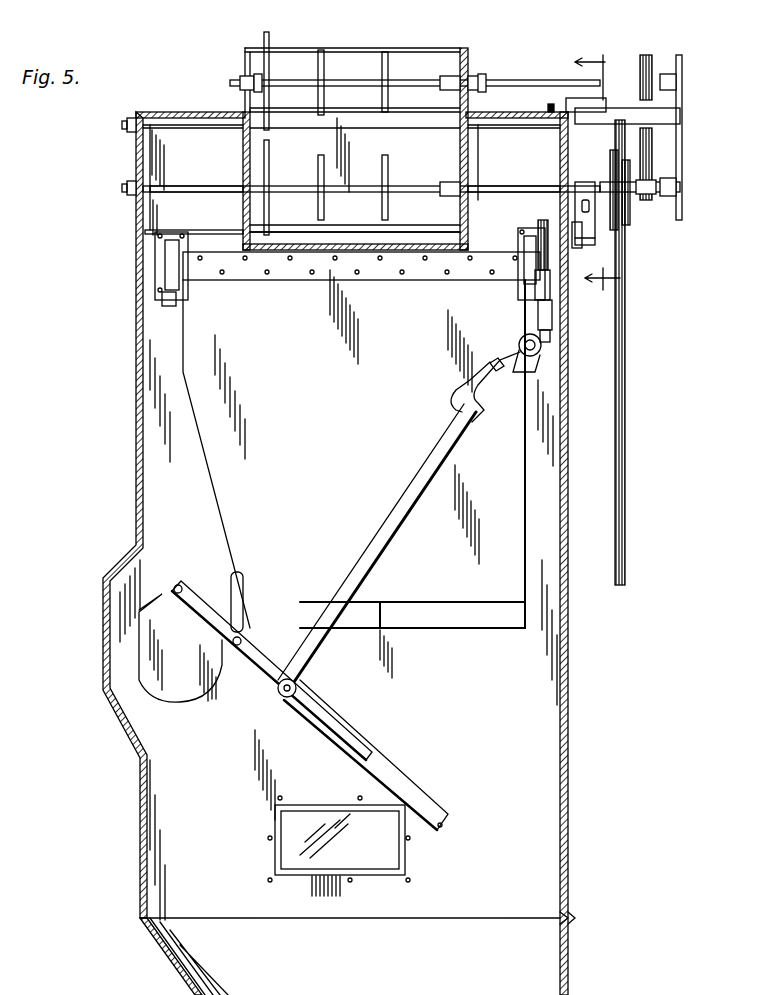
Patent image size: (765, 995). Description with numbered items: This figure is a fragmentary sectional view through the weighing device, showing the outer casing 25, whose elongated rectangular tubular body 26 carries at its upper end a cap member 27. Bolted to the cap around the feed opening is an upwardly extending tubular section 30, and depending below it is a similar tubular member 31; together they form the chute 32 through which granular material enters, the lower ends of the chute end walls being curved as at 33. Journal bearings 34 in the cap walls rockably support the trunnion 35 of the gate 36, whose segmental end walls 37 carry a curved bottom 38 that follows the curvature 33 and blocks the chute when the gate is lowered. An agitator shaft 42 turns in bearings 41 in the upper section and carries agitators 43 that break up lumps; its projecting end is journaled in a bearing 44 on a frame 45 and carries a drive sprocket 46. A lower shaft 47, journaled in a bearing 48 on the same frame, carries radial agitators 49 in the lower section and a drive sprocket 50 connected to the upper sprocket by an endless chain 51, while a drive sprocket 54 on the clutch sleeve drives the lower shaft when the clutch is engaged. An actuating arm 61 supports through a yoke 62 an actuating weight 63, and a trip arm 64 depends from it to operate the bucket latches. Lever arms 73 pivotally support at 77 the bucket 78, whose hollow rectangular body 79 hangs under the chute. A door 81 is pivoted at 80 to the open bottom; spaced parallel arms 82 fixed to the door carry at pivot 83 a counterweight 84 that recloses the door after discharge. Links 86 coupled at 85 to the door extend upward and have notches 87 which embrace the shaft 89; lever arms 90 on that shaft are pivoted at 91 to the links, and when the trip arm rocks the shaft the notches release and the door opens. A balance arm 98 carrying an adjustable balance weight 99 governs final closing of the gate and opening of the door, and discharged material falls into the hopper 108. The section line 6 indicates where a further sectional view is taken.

The section line 6- 6 is at (606, 171).
The outer casing 25 is at (128, 444).
The tubular body 26 is at (568, 418).
The cap member 27 is at (136, 158).
The upwardly extending tubular section 30 is at (470, 58).
The tubular member 31 is at (458, 132).
The chute 32 is at (360, 66).
The curved lower ends of chute end walls 33 is at (268, 243).
The journal bearings 34 is at (127, 126).
The trunnion 35 is at (236, 112).
The gate 36 is at (406, 262).
The segmental end walls 37 is at (243, 216).
The bottom 38 is at (478, 156).
The bearings 41 is at (250, 78).
The agitator shaft 42 is at (430, 80).
The agitators 43 is at (318, 66).
The bearing 44 is at (682, 72).
The frame 45 is at (668, 118).
The drive sprocket 46 is at (127, 192).
The shaft 47 is at (505, 186).
The bearing 48 is at (680, 180).
The radial agitators 49 is at (382, 168).
The drive sprocket 50 is at (656, 196).
The endless chain 51 is at (652, 148).
The drive sprocket 54 is at (610, 132).
The actuating arm 61 is at (548, 205).
The yoke 62 is at (560, 248).
The actuating weight 63 is at (552, 316).
The trip arm 64 is at (550, 336).
The lever arms 73 is at (165, 278).
The pivot 77 is at (166, 306).
The bucket 78 is at (220, 452).
The hollow rectangular body 79 is at (247, 487).
The pivot 80 is at (237, 648).
The door 81 is at (344, 725).
The spaced parallel arms 82 is at (214, 598).
The pivot 83 is at (176, 584).
The counterweight 84 is at (174, 688).
The pivot 85 is at (285, 698).
The links 86 is at (393, 512).
The notches 87 is at (480, 400).
The shaft 89 is at (533, 367).
The lever arms 90 is at (519, 345).
The pivot 91 is at (492, 362).
The balance arm 98 is at (585, 198).
The balance weight 99 is at (590, 238).
The hopper 108 is at (215, 950).